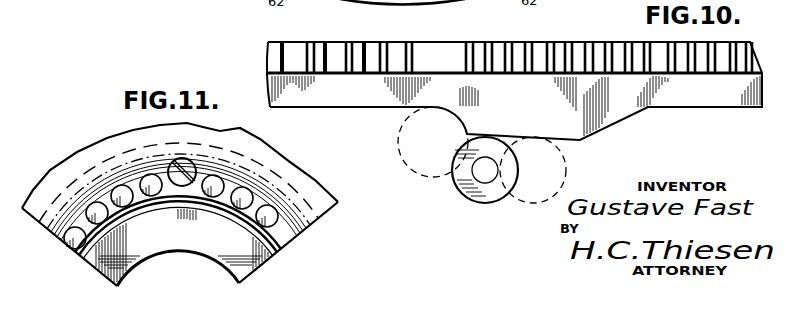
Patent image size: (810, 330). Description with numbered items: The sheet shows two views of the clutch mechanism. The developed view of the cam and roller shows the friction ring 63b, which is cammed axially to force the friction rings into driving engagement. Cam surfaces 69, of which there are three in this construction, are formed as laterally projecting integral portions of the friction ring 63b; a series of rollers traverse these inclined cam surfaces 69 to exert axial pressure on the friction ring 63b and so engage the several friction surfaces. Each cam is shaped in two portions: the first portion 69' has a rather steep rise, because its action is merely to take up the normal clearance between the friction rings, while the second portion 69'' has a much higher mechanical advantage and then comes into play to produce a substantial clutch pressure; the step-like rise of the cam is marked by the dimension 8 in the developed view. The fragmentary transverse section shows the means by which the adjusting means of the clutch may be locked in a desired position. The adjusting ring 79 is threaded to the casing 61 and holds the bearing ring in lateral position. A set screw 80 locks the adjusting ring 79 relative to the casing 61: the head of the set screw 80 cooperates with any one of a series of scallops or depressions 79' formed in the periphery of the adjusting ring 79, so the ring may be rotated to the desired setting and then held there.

In FIG. 10, the width dimension of bar segment 8 is at (268, 24).
In FIG. 10, the friction ring 63b is at (332, 82).
In FIG. 10, the first portion of the cam 69' is at (452, 130).
In FIG. 10, the second portion of the cam 69'' is at (496, 157).
In FIG. 10, the cam surfaces 69 is at (579, 157).
In FIG. 11, the casing 61 is at (297, 172).
In FIG. 11, the adjusting ring 79 is at (178, 240).
In FIG. 11, the scallops or depressions 79' is at (171, 200).
In FIG. 11, the set screw 80 is at (190, 168).